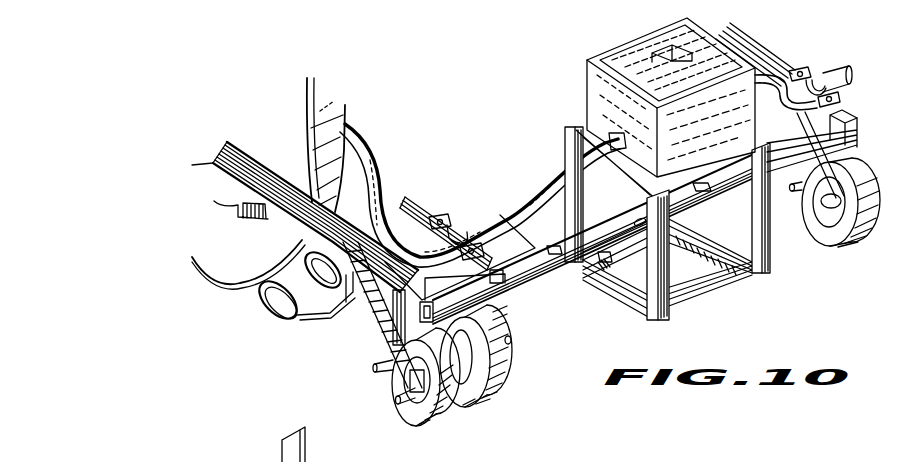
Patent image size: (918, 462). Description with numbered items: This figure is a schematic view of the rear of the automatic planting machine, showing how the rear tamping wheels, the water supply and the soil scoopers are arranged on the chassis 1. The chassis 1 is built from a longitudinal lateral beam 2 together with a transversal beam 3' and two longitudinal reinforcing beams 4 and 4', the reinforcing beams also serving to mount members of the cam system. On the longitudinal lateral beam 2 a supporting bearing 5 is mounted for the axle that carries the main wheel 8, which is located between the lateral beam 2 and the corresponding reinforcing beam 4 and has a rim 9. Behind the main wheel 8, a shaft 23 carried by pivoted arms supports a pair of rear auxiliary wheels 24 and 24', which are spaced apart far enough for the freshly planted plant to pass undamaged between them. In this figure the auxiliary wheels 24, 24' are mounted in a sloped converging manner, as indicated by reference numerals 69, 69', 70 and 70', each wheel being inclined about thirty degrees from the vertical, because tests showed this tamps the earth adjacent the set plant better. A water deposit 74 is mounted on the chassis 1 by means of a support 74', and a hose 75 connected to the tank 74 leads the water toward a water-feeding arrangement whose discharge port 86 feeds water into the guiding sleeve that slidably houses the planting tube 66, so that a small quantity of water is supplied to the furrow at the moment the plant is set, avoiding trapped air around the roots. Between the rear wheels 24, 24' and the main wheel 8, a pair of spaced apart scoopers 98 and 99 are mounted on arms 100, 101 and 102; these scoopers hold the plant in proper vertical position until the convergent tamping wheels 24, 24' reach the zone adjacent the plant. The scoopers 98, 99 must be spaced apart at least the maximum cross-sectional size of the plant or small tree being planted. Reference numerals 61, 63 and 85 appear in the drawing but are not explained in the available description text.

The chassis 1 is at (604, 278).
The longitudinal lateral beam 2 is at (253, 170).
The transversal beam 3' is at (691, 244).
The longitudinal reinforcing beam 4 is at (451, 226).
The longitudinal reinforcing beam 4' is at (786, 94).
The supporting bearing 5 is at (222, 206).
The main wheel 8 is at (335, 123).
The rim 9 is at (383, 452).
The shaft 23 is at (395, 390).
The rear auxiliary wheel 24 is at (595, 254).
The rear auxiliary wheel 24' is at (514, 390).
The conduit 61 is at (628, 22).
The conduit 63 is at (579, 0).
The planting tube 66 is at (310, 460).
The sloped converging wheel arrangement 69 is at (494, 387).
The sloped converging wheel arrangement 69' is at (507, 363).
The sloped converging wheel arrangement 70 is at (395, 334).
The sloped converging wheel arrangement 70' is at (593, 236).
The water deposit 74 is at (671, 88).
The support 74' is at (673, 272).
The hose 75 is at (497, 216).
The member 85 is at (246, 452).
The discharge port 86 is at (200, 452).
The scooper 98 is at (258, 298).
The scooper 99 is at (292, 258).
The arm 100 is at (297, 316).
The arm 101 is at (338, 296).
The arm 102 is at (402, 286).